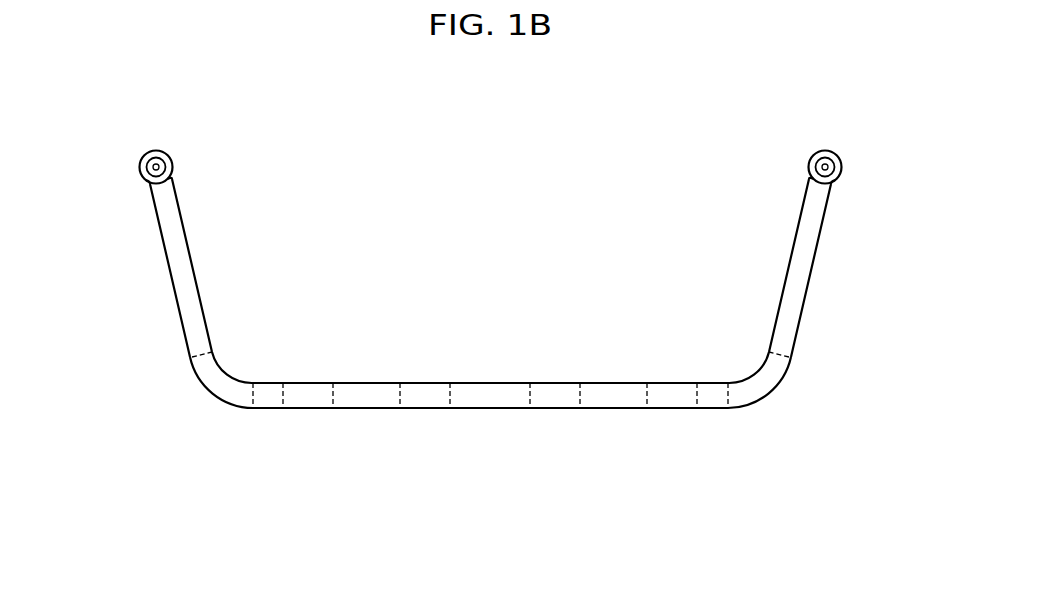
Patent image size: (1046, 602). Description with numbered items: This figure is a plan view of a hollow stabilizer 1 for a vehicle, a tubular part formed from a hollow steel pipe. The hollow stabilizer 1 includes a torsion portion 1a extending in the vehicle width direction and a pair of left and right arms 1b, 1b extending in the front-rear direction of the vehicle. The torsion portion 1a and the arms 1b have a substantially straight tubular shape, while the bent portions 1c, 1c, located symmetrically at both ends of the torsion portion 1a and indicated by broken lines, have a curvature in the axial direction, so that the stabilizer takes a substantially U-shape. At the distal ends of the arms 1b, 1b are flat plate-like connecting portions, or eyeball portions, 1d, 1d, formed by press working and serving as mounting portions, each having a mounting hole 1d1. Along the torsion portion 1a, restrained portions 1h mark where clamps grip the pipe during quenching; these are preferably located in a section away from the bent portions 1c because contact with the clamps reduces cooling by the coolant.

The hollow stabilizer 1 is at (484, 422).
The torsion portion 1a is at (495, 389).
The arm 1b is at (180, 283).
The bent portion 1c is at (218, 388).
The connecting portion (eyeball portion) 1d is at (140, 168).
The mounting hole 1d1 is at (163, 160).
The restrained portion 1h is at (314, 394).